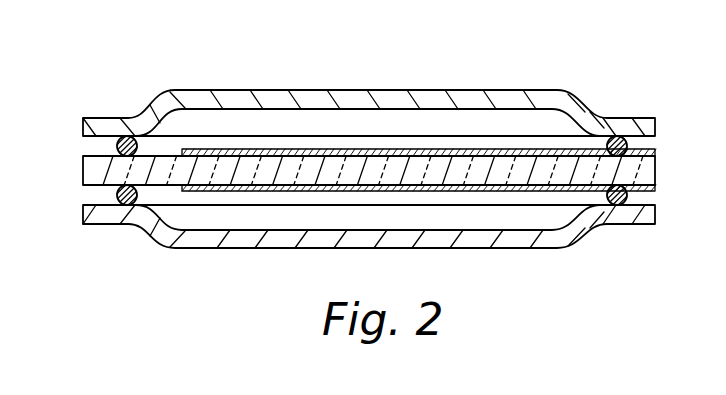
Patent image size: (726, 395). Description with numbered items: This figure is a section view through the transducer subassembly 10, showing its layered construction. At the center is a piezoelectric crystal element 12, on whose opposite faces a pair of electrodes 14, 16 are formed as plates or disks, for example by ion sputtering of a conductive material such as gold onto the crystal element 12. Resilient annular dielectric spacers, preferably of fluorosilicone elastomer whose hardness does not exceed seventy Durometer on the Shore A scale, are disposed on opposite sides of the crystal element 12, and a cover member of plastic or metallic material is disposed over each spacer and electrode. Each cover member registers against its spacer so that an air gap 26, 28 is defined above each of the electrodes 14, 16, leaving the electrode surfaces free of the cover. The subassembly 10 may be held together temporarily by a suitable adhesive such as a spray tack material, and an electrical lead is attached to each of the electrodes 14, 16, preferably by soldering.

The transducer subassembly 10 is at (403, 164).
The piezoelectric crystal element 12 is at (652, 167).
The electrode 14 is at (313, 148).
The electrode 16 is at (300, 191).
The air gap 26 is at (530, 197).
The air gap 28 is at (530, 141).